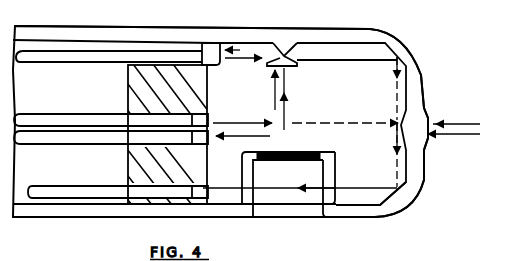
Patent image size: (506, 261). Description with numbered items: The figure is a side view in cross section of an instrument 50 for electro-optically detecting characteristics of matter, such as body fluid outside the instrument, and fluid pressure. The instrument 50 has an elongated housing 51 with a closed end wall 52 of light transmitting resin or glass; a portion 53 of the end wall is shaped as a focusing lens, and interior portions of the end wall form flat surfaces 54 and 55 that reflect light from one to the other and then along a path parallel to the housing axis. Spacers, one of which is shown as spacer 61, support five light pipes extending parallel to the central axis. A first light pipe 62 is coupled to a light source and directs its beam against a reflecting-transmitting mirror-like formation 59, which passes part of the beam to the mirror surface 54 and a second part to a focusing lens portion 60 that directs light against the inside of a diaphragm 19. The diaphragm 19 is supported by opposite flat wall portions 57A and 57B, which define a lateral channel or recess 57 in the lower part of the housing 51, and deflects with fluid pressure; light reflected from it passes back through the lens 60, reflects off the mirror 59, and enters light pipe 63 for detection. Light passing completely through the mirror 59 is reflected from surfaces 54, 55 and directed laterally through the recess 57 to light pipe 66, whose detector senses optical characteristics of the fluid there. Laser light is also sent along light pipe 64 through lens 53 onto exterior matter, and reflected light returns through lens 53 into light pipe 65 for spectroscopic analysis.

The diaphragm 19 is at (284, 130).
The instrument 50 is at (49, 222).
The elongated housing 51 is at (48, 33).
The closed end wall 52 is at (395, 36).
The focusing lens portion 53 is at (423, 125).
The flat reflecting surface 54 is at (398, 57).
The flat reflecting surface 55 is at (400, 192).
The lateral channel or recess 57 is at (313, 195).
The flat wall portion 57A is at (243, 182).
The flat wall portion 57B is at (337, 180).
The reflecting-transmitting mirror-like formation 59 is at (283, 50).
The focusing lens portion 60 is at (280, 90).
The spacer 61 is at (127, 81).
The first light pipe 62 is at (218, 64).
The light pipe 63 is at (222, 44).
The light pipe 64 is at (90, 117).
The light pipe 65 is at (74, 138).
The light pipe 66 is at (110, 182).